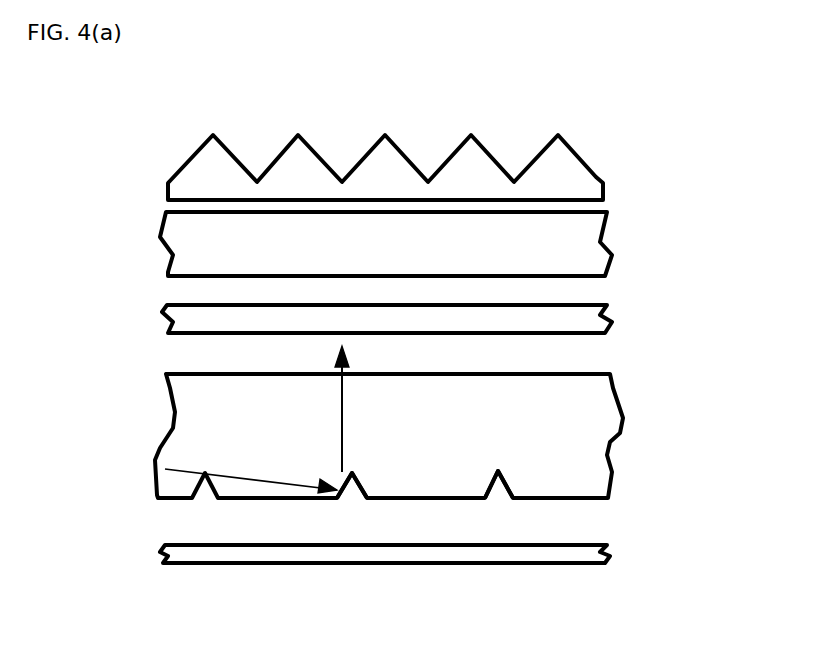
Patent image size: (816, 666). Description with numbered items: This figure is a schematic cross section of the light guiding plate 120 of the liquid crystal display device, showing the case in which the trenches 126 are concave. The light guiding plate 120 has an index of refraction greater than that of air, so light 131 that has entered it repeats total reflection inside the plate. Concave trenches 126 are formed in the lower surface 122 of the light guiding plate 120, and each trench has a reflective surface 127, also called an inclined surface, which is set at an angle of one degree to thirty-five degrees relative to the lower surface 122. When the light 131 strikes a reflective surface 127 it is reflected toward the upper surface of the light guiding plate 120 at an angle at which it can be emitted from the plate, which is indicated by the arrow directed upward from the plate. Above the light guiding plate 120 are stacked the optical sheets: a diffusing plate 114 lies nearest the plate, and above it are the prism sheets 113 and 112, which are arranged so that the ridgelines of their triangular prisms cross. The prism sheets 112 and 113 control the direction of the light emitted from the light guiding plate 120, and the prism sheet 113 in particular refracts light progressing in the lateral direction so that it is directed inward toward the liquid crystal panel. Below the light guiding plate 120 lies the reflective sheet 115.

The prism sheet 112 is at (610, 183).
The prism sheet 113 is at (612, 256).
The diffusing plate 114 is at (613, 322).
The reflective sheet 115 is at (612, 556).
The light guiding plate 120 is at (600, 432).
The lower surface 122 is at (430, 497).
The trench 126 is at (500, 495).
The reflective surface 127 is at (335, 495).
The light 131 is at (275, 483).